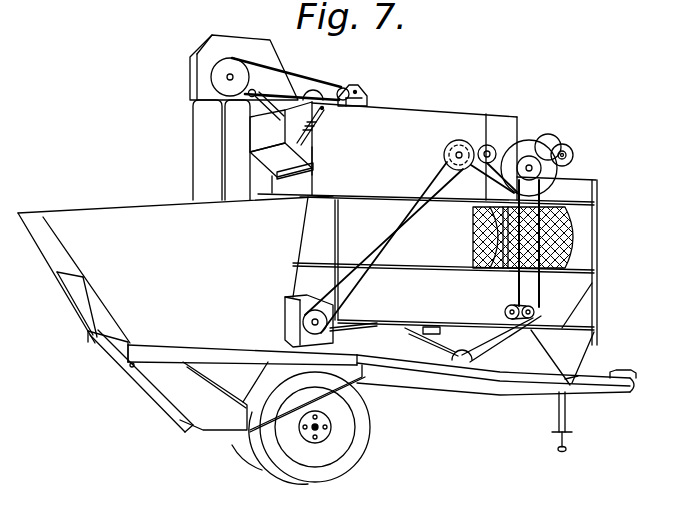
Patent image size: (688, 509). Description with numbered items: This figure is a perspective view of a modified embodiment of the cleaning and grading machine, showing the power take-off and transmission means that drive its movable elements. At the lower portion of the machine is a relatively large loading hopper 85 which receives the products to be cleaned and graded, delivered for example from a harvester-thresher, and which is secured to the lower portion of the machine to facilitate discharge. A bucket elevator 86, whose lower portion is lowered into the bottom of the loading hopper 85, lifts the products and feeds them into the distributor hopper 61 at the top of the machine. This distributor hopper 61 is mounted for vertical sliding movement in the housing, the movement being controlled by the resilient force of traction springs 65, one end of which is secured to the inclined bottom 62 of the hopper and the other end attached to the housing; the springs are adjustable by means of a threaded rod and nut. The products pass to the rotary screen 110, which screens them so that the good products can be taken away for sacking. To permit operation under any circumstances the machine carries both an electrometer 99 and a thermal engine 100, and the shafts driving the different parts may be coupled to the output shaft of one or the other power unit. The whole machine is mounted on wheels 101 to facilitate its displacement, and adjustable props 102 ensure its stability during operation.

The distributor hopper 61 is at (257, 135).
The inclined bottom 62 is at (313, 163).
The traction springs 65 is at (313, 140).
The loading hopper 85 is at (175, 279).
The bucket elevator 86 is at (235, 168).
The electrometer 99 is at (557, 143).
The thermal engine 100 is at (287, 322).
The wheels 101 is at (352, 462).
The adjustable props 102 is at (153, 387).
The rotary screen 110 is at (574, 238).